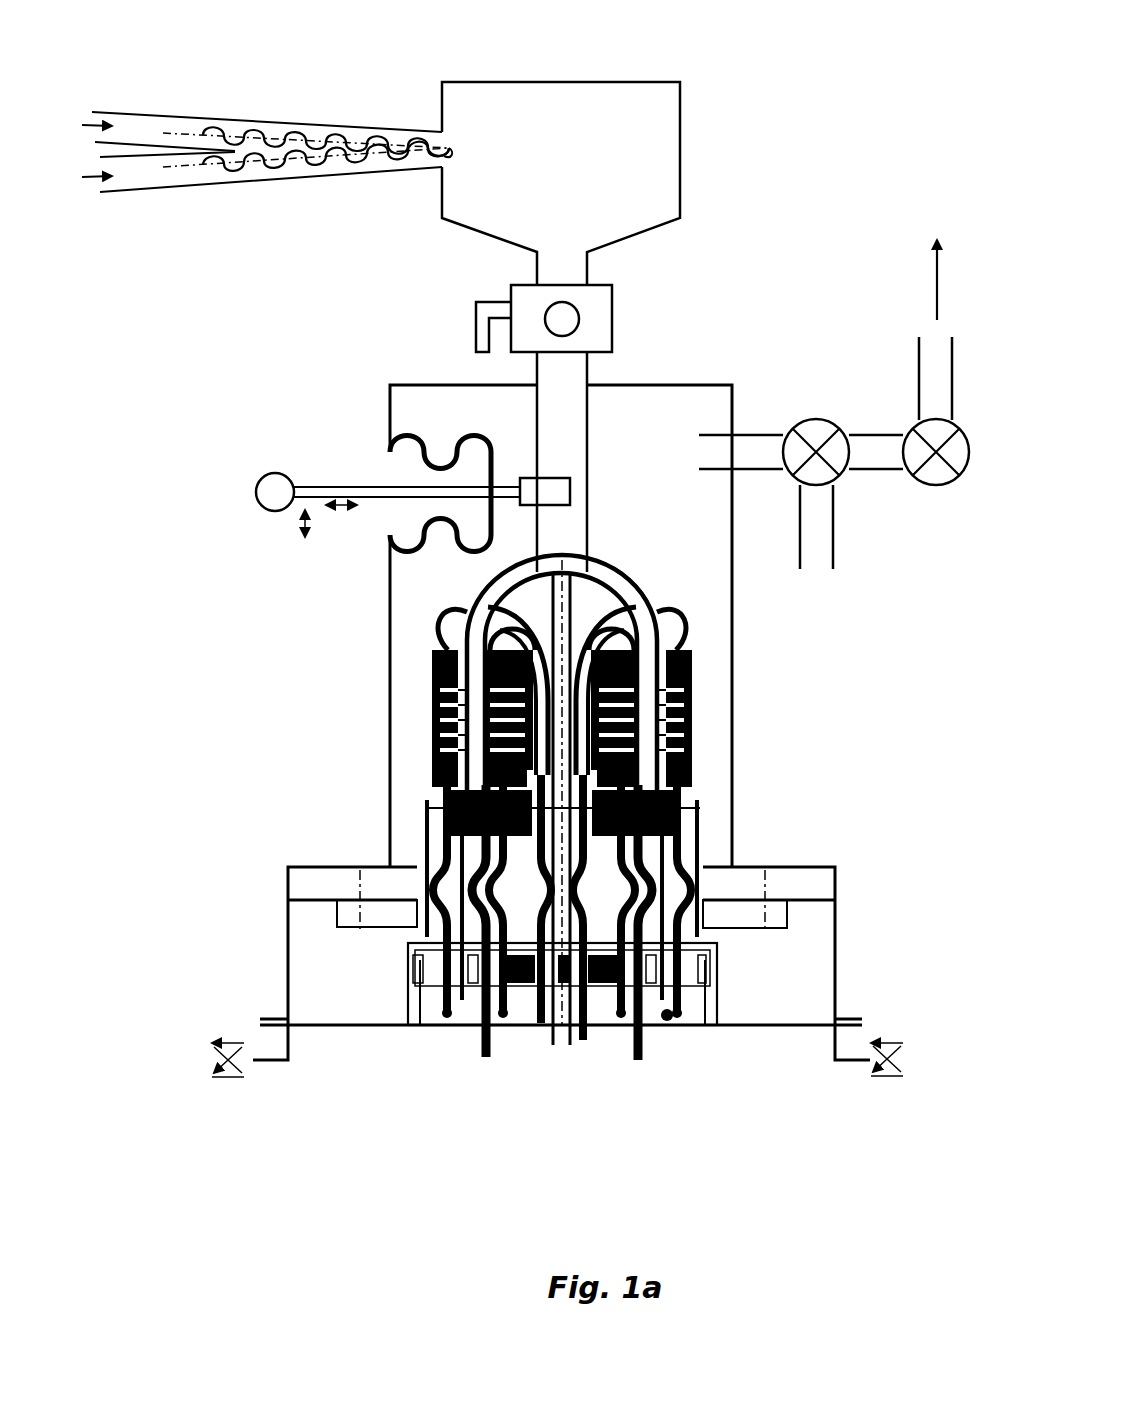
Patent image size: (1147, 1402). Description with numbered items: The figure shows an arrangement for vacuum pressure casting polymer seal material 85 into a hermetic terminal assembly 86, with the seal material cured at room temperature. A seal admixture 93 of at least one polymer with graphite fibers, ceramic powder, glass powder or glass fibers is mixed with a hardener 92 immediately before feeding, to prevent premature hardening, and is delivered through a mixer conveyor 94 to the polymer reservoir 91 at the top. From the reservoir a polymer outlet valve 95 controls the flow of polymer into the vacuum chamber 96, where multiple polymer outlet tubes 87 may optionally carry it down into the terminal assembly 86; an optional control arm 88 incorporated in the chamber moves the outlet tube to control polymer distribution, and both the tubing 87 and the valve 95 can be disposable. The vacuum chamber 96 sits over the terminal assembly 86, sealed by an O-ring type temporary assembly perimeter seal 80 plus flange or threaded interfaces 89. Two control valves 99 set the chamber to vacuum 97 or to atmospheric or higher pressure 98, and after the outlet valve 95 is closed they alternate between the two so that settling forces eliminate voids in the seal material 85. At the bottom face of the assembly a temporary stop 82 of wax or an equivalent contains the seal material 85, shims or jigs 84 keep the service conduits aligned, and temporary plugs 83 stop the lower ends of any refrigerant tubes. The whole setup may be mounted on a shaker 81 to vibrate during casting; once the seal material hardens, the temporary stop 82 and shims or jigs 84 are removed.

The temporary assembly perimeter seal 80 is at (705, 862).
The shaker 81 is at (887, 1073).
The temporary stop 82 is at (697, 1017).
The temporary plugs 83 is at (667, 1015).
The shims or jigs 84 is at (522, 968).
The polymer seal material 85 is at (522, 857).
The terminal assembly 86 is at (432, 727).
The polymer outlet tubes 87 is at (480, 575).
The control arm 88 is at (317, 485).
The flange or threaded interfaces 89 is at (763, 903).
The polymer reservoir 91 is at (662, 115).
The hardener 92 is at (128, 125).
The seal admixture 93 is at (128, 178).
The mixer conveyor 94 is at (345, 142).
The polymer outlet valve 95 is at (597, 325).
The vacuum chamber 96 is at (718, 390).
The vacuum 97 is at (930, 236).
The atmospheric or higher pressure 98 is at (818, 567).
The control valves 99 is at (841, 472).